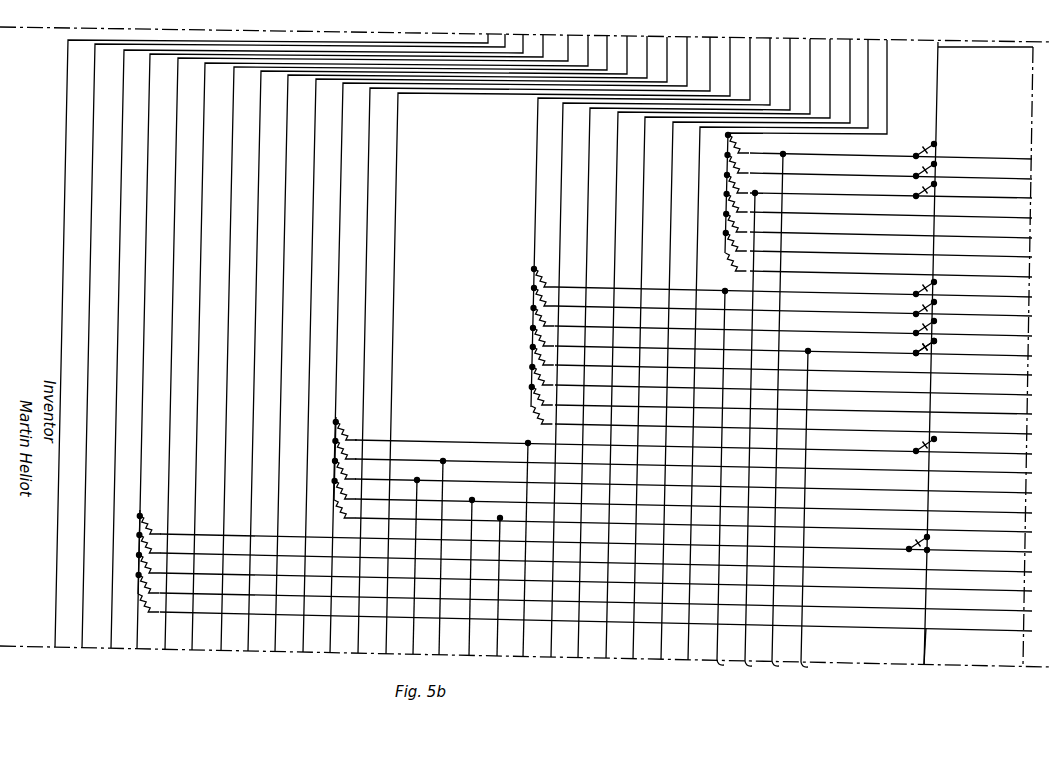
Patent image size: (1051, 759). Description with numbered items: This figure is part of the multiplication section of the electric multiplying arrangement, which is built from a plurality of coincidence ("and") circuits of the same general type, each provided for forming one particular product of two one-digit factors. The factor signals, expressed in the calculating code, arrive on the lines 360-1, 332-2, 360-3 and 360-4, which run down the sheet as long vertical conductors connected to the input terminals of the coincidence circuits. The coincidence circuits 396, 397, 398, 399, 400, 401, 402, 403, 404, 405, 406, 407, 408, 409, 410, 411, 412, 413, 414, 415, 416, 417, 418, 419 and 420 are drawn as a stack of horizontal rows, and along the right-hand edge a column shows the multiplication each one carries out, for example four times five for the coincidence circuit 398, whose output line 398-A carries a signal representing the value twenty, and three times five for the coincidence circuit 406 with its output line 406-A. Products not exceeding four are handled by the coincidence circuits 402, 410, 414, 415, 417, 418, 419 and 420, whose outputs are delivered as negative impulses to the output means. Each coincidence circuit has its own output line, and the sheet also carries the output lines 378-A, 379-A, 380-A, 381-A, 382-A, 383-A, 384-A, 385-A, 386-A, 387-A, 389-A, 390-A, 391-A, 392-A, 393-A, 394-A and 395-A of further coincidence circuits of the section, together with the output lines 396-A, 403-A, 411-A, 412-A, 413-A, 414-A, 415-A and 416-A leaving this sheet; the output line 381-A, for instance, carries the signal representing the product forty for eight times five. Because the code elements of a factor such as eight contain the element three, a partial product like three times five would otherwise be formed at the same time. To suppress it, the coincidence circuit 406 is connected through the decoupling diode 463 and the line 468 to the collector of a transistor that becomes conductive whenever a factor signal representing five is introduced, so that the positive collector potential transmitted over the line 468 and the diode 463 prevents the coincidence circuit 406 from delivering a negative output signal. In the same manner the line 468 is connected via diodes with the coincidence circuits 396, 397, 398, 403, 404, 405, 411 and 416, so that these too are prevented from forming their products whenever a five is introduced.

The output line 393-A is at (58, 410).
The output line 394-A is at (86, 393).
The output line 395-A is at (114, 374).
The output line 360-1 is at (141, 361).
The output line 390-A is at (168, 344).
The output line 391-A is at (196, 328).
The output line 392-A is at (226, 309).
The output line 386-A is at (254, 293).
The output line 387-A is at (281, 278).
The output line 389-A is at (309, 259).
The output line 332-2 is at (338, 244).
The output line 384-A is at (366, 226).
The output line 385-A is at (394, 213).
The output line 360-3 is at (534, 254).
The output line 378-A is at (557, 222).
The output line 381-A is at (584, 207).
The output line 379-A is at (612, 192).
The output line 380-A is at (640, 176).
The output line 382-A is at (668, 159).
The output line 383-A is at (695, 143).
The output line 360-4 is at (793, 134).
The line 468 is at (936, 108).
The decoupling diode 463 is at (915, 352).
The output line 416-A is at (925, 660).
The coincidence circuit 396 is at (848, 145).
The coincidence circuit 397 is at (838, 165).
The coincidence circuit 398 is at (838, 185).
The coincidence circuit 399 is at (838, 204).
The coincidence circuit 400 is at (838, 224).
The coincidence circuit 401 is at (838, 243).
The coincidence circuit 402 is at (838, 263).
The coincidence circuit 403 is at (838, 283).
The coincidence circuit 404 is at (838, 302).
The coincidence circuit 405 is at (838, 322).
The coincidence circuit 406 is at (838, 342).
The coincidence circuit 407 is at (838, 361).
The coincidence circuit 408 is at (838, 381).
The coincidence circuit 409 is at (838, 400).
The coincidence circuit 410 is at (838, 420).
The coincidence circuit 411 is at (838, 440).
The coincidence circuit 412 is at (838, 459).
The coincidence circuit 413 is at (838, 479).
The coincidence circuit 414 is at (838, 499).
The coincidence circuit 415 is at (838, 518).
The coincidence circuit 416 is at (838, 538).
The coincidence circuit 417 is at (838, 558).
The coincidence circuit 418 is at (838, 577).
The coincidence circuit 419 is at (838, 597).
The coincidence circuit 420 is at (838, 617).
The output line 411-A is at (525, 444).
The output line 412-A is at (441, 462).
The output line 413-A is at (415, 481).
The output line 414-A is at (470, 501).
The output line 415-A is at (498, 519).
The output line 403-A is at (743, 667).
The output line 398-A is at (751, 668).
The output line 396-A is at (778, 668).
The output line 406-A is at (813, 668).